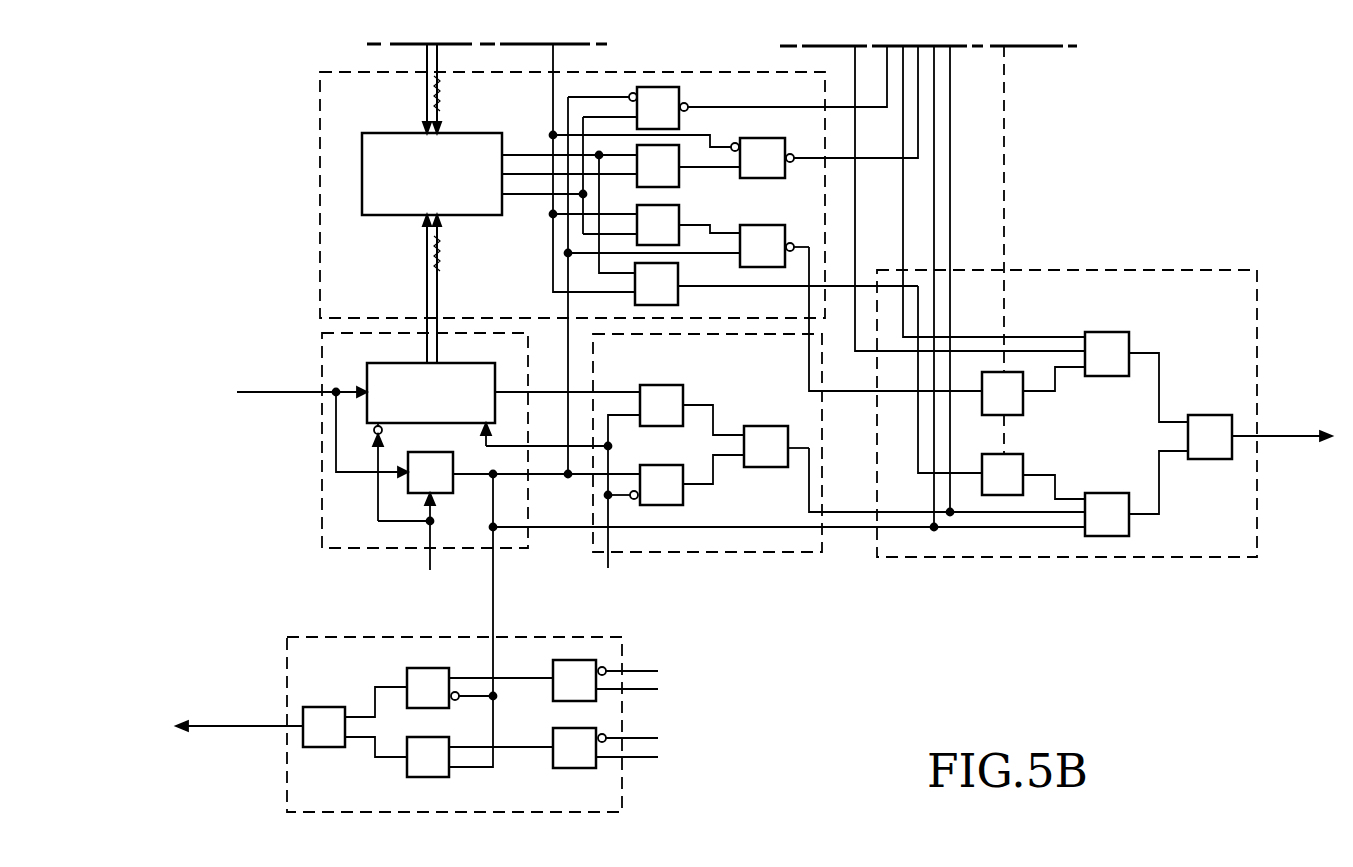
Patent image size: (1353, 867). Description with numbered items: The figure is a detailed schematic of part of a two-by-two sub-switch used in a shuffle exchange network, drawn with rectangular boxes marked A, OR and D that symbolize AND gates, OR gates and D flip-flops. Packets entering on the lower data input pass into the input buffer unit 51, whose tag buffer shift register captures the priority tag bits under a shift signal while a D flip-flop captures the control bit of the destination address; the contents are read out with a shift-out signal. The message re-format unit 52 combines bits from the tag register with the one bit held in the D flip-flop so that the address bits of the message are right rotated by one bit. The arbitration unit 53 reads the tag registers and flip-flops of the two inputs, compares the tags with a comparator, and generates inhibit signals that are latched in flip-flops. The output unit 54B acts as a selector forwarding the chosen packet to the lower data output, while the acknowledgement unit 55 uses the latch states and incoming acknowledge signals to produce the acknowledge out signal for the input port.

The input buffer unit 51 is at (360, 550).
The message re-format unit 52 is at (766, 553).
The arbitration unit 53 is at (318, 236).
The output unit 54B is at (1175, 558).
The acknowledgement unit 55 is at (302, 632).